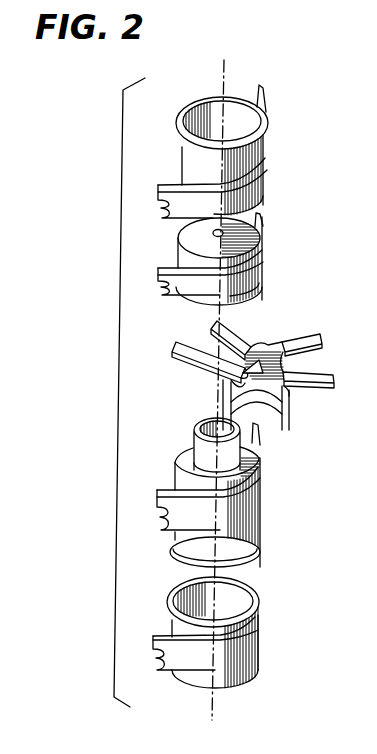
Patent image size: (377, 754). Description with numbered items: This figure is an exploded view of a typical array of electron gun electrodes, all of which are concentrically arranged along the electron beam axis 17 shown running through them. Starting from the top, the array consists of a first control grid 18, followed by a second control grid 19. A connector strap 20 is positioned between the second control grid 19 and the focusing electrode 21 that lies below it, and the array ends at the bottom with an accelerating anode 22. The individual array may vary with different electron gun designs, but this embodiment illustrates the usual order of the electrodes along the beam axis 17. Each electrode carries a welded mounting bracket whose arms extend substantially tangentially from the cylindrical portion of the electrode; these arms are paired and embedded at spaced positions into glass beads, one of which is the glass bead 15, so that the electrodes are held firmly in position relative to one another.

The glass bead 15 is at (290, 752).
The electron beam axis 17 is at (212, 700).
The first control grid 18 is at (176, 128).
The second control grid 19 is at (178, 250).
The connector strap 20 is at (173, 348).
The focusing electrode 21 is at (175, 468).
The accelerating anode 22 is at (168, 606).